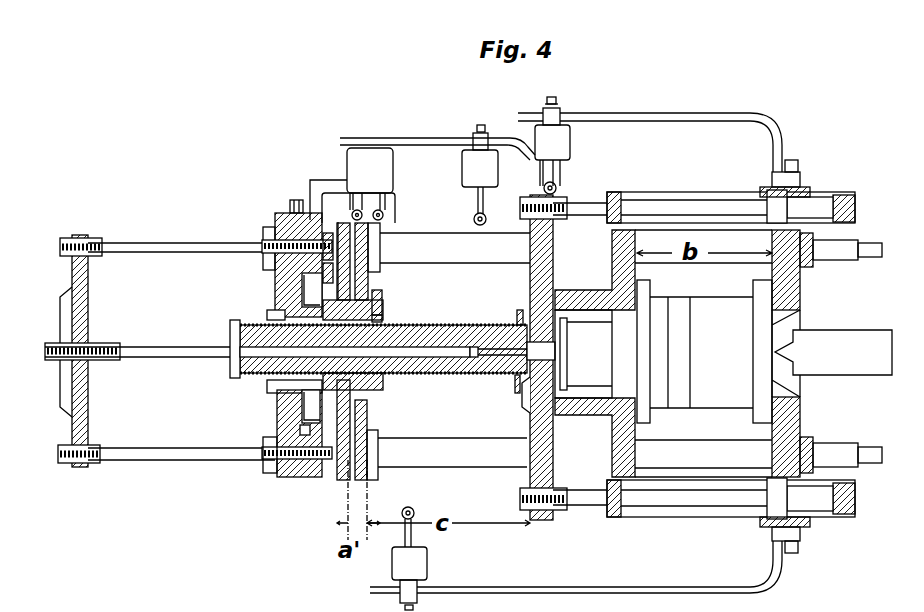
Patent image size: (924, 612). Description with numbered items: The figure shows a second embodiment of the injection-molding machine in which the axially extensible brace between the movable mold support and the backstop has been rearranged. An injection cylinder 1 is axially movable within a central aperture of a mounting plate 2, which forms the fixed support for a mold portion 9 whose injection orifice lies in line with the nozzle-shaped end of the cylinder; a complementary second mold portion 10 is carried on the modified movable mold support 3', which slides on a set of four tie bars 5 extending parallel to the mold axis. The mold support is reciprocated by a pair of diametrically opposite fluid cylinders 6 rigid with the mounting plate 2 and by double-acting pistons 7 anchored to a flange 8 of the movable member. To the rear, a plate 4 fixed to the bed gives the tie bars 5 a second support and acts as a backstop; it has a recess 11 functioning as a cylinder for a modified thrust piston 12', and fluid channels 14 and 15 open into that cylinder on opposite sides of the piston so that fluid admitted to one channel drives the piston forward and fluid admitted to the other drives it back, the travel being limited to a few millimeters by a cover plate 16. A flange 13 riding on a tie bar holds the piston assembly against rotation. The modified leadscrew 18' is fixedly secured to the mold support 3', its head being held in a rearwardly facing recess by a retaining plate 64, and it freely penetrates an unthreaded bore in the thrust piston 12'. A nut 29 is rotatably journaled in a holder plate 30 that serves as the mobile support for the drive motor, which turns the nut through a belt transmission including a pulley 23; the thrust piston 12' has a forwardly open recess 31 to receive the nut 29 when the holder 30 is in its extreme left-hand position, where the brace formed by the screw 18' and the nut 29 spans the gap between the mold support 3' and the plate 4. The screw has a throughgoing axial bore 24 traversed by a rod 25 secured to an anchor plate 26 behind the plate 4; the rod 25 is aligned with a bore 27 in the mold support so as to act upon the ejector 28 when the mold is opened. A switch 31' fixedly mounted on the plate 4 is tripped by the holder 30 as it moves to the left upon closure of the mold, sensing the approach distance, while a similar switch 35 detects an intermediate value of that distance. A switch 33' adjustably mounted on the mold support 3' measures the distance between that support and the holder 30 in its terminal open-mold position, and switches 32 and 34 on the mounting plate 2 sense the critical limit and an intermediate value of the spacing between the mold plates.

The injection cylinder 1 is at (878, 353).
The mounting plate 2 is at (790, 424).
The movable mold support 3' is at (582, 512).
The backstop plate 4 is at (300, 213).
The tie bars 5 is at (747, 452).
The fluid cylinders 6 is at (720, 515).
The pistons 7 is at (666, 498).
The flange 8 is at (543, 509).
The mold portion 9 is at (720, 392).
The second mold portion 10 is at (655, 390).
The recess 11 is at (272, 473).
The thrust piston 12' is at (322, 444).
The flange 13 is at (338, 212).
The fluid channel 14 is at (278, 420).
The fluid channel 15 is at (298, 430).
The cover plate 16 is at (379, 426).
The leadscrew 18' is at (378, 365).
The pulley 23 is at (382, 295).
The axial bore 24 is at (497, 345).
The rod 25 is at (160, 358).
The anchor plate 26 is at (80, 468).
The bore 27 is at (545, 350).
The ejection device 28 is at (566, 351).
The nut 29 is at (382, 318).
The holder plate 30 is at (384, 202).
The recess 31 is at (280, 287).
The switch 31' is at (319, 191).
The switch 32 is at (557, 187).
The switch 33' is at (461, 175).
The switch 34 is at (410, 507).
The switch 35 is at (380, 212).
The retaining plate 64 is at (515, 385).